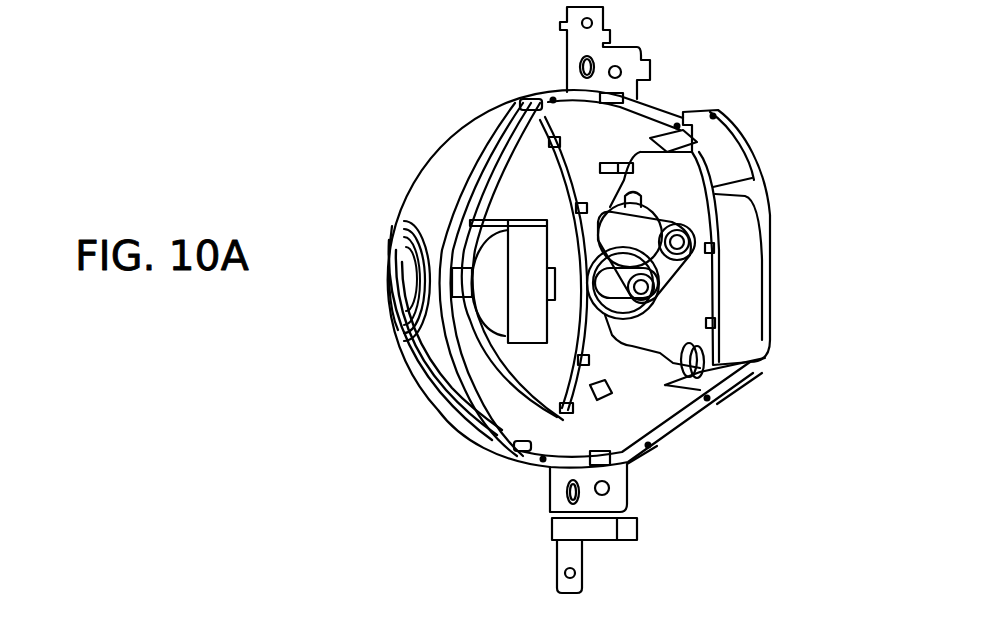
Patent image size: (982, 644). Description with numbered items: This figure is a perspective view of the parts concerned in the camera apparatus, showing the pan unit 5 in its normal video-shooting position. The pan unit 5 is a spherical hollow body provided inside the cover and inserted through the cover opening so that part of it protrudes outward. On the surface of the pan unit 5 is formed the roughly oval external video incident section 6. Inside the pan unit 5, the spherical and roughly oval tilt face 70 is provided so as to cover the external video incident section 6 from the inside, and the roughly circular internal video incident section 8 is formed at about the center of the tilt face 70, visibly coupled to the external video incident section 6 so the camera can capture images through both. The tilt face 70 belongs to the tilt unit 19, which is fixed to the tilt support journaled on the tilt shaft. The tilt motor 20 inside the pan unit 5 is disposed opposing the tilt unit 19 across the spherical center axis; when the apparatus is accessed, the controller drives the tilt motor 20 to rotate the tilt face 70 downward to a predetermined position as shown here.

The pan unit 5 is at (470, 140).
The external video incident section 6 is at (403, 337).
The internal video incident section 8 is at (400, 223).
The tilt unit 19 is at (557, 180).
The tilt motor 20 is at (743, 273).
The tilt face 70 is at (427, 347).